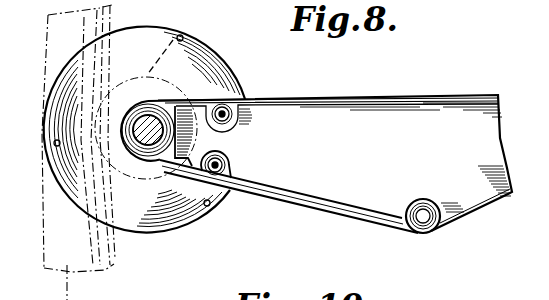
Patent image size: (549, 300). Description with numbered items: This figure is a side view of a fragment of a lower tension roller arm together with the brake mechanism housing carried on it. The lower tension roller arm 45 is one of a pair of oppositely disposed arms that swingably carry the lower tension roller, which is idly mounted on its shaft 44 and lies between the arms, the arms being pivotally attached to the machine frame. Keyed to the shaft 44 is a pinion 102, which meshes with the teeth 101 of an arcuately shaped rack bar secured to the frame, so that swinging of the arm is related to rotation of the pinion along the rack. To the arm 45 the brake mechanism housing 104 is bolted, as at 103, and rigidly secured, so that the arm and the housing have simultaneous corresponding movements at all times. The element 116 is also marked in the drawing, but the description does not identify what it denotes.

The shaft 44 is at (148, 134).
The lower tension roller arm 45 is at (387, 113).
The teeth 101 is at (118, 263).
The pinion 102 is at (173, 42).
The bolt 103 is at (221, 163).
The brake mechanism housing 104 is at (228, 73).
The pivot 116 is at (548, 144).